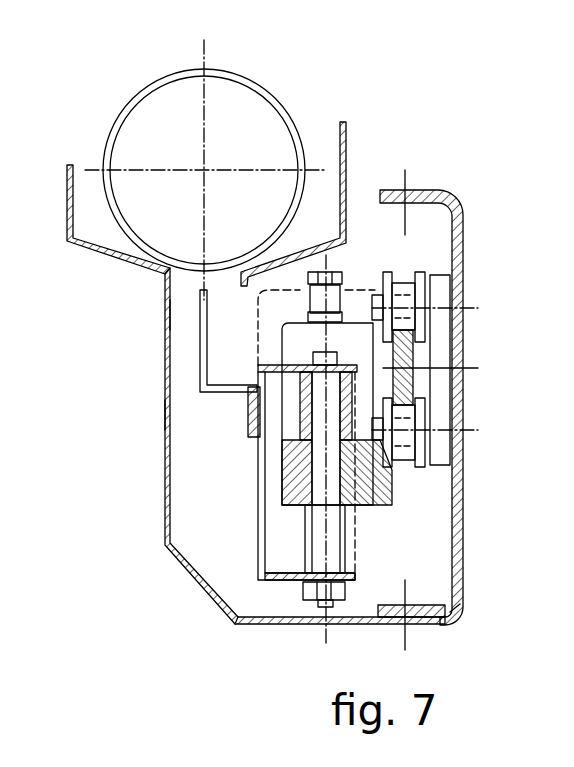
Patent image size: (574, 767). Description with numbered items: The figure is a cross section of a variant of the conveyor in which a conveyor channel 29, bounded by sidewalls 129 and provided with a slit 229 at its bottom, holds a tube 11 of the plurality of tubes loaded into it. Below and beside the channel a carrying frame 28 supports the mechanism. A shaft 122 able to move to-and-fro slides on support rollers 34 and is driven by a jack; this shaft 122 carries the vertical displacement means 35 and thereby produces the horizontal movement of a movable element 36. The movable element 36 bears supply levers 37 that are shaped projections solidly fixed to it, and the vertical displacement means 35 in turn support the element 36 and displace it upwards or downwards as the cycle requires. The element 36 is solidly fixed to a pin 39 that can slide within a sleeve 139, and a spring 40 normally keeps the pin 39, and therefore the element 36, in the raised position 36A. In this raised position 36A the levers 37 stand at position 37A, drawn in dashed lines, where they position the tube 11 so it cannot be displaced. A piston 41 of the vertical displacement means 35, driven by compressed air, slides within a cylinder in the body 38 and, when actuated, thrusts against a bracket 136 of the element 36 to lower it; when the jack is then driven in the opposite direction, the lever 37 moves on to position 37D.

The tube 11 is at (283, 95).
The conveyor channel 29 is at (96, 190).
The sidewall 129 is at (348, 148).
The movable element 36 is at (242, 469).
The raised position 36A is at (272, 271).
The supply lever 37 is at (203, 345).
The lever position 37A is at (197, 243).
The lever position 37D is at (166, 410).
The slit 229 is at (184, 290).
The carrying frame 28 is at (459, 240).
The shaft 122 is at (420, 360).
The support roller 34 is at (438, 424).
The vertical displacement means 35 is at (422, 546).
The body 38 is at (291, 338).
The spring 40 is at (256, 420).
The sleeve 139 is at (258, 451).
The piston 41 is at (347, 540).
The pin 39 is at (299, 601).
The bracket 136 is at (261, 583).